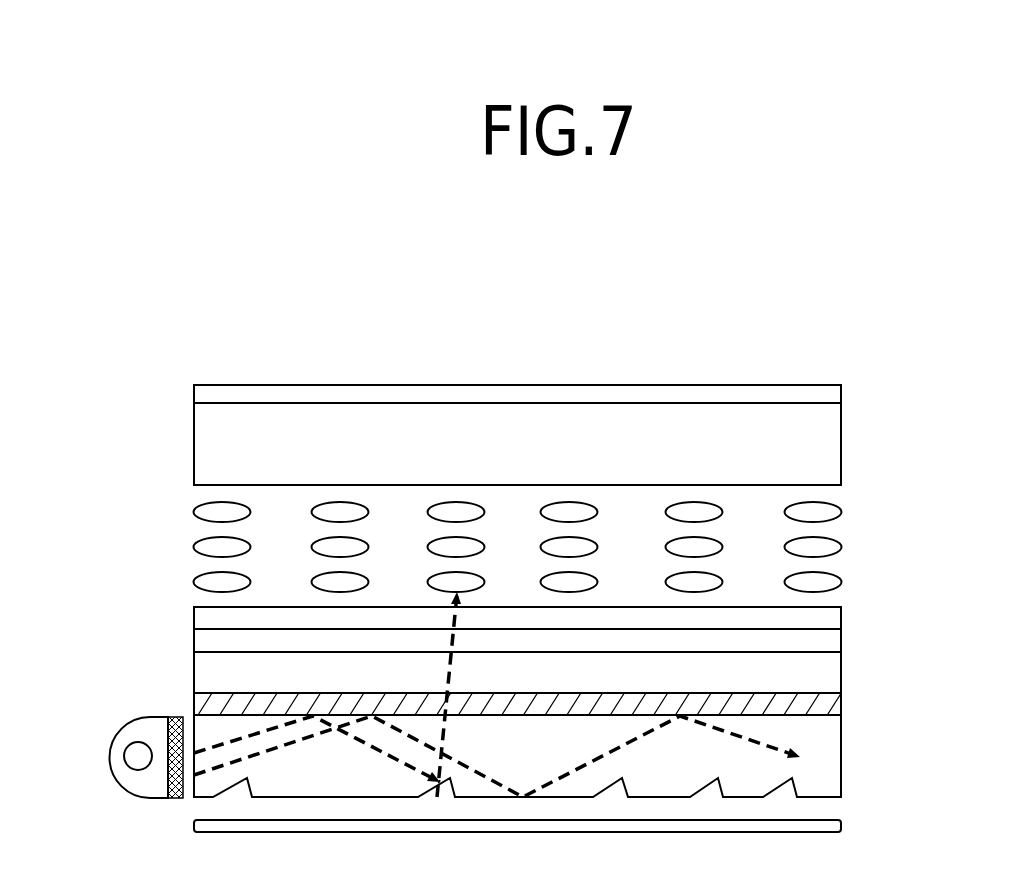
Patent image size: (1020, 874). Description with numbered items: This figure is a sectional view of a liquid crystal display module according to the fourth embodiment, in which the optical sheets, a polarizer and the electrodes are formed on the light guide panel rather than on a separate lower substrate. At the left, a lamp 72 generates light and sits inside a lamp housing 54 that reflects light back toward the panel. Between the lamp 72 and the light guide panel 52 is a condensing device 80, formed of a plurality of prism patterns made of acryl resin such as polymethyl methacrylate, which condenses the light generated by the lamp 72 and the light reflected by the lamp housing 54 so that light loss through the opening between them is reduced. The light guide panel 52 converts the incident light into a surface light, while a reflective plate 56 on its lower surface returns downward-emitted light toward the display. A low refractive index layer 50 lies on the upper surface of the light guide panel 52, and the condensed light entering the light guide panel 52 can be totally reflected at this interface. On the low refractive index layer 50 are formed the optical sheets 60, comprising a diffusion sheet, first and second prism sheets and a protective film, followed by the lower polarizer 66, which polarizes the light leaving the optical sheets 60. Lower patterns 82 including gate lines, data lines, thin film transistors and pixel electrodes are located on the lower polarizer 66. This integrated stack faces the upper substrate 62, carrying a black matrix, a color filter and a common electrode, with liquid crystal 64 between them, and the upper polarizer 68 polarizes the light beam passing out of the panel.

The low refractive index layer 50 is at (841, 718).
The light guide panel 52 is at (841, 756).
The lamp housing 54 is at (122, 777).
The reflective plate 56 is at (841, 826).
The optical sheets 60 is at (841, 683).
The upper substrate 62 is at (841, 456).
The liquid crystal 64 is at (816, 506).
The lower polarizer 66 is at (841, 640).
The upper polarizer 68 is at (843, 391).
The lamp 72 is at (133, 748).
The condensing device 80 is at (177, 800).
The lower patterns 82 is at (841, 613).